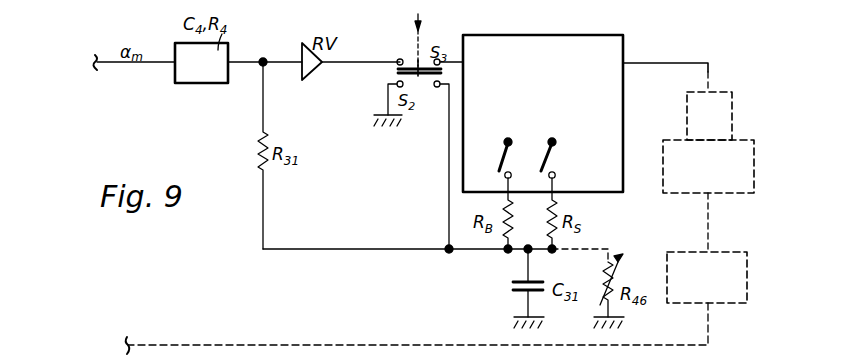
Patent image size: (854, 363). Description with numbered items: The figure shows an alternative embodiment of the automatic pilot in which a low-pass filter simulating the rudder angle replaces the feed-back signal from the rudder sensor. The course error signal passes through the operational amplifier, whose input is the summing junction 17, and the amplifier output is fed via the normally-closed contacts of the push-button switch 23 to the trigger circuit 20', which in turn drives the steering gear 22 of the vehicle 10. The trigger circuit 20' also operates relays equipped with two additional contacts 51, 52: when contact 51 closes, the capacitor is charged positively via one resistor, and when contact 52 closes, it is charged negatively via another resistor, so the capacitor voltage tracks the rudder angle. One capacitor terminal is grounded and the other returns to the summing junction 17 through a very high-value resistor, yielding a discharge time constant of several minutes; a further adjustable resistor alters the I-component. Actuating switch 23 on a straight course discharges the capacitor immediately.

The summing junction 17 is at (263, 58).
The switch 23 is at (420, 52).
The trigger circuit 20' is at (543, 100).
The contact 51 is at (504, 176).
The contact 52 is at (556, 177).
The steering gear 22 is at (735, 142).
The vehicle 10 is at (744, 259).